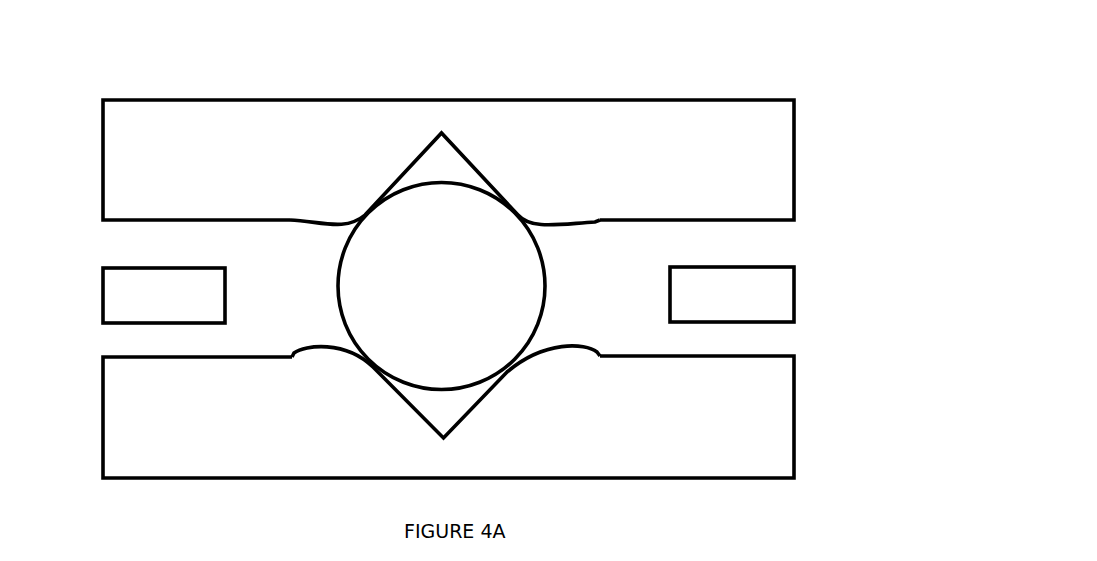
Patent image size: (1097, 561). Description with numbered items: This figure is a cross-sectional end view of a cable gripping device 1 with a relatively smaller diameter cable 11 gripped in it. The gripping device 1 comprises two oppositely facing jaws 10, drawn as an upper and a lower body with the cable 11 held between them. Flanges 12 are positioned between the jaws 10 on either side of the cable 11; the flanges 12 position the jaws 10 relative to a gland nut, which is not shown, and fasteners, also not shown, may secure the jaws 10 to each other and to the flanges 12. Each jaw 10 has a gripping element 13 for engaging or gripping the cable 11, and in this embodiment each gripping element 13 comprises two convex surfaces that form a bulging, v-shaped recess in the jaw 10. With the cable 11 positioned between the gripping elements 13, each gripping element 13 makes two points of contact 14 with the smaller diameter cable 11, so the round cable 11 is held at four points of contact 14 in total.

The gripping device 1 is at (690, 52).
The jaw 10 is at (772, 112).
The cable 11 is at (380, 258).
The flange 12 is at (120, 294).
The gripping element 13 is at (432, 155).
The point of contact 14 is at (386, 196).